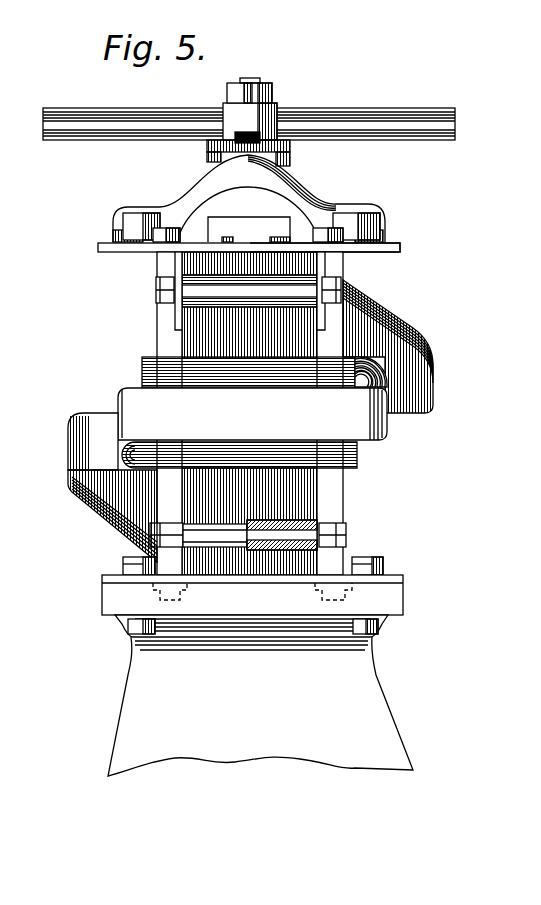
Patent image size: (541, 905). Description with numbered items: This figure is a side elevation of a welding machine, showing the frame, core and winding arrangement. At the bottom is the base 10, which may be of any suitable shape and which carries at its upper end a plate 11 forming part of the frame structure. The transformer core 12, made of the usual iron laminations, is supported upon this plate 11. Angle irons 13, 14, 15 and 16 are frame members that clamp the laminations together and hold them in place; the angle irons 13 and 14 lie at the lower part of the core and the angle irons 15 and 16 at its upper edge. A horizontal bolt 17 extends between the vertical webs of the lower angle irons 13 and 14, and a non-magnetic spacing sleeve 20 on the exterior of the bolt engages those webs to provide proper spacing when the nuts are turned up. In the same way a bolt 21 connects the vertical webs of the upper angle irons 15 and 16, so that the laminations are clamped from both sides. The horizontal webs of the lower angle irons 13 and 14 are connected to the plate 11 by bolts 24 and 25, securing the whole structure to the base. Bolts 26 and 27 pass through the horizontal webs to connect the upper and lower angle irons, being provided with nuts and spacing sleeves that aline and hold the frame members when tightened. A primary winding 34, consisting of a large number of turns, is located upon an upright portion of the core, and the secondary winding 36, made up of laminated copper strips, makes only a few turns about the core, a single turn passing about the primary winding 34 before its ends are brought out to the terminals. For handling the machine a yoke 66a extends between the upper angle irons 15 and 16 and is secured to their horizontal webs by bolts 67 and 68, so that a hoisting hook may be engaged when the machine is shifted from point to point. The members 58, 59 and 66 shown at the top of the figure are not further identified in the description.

The base 10 is at (260, 706).
The plate 11 is at (390, 597).
The transformer core 12 is at (200, 305).
The angle iron 13 is at (105, 575).
The angle iron 14 is at (403, 574).
The angle iron 15 is at (98, 250).
The angle iron 16 is at (403, 251).
The bolt 17 is at (317, 535).
The spacing sleeve 20 is at (280, 556).
The bolt 21 is at (343, 279).
The bolt 24 is at (380, 630).
The bolt 25 is at (128, 628).
The bolt 26 is at (151, 243).
The bolt 27 is at (323, 230).
The primary winding 34 is at (190, 378).
The secondary winding 36 is at (249, 421).
The cap nut 58 is at (252, 82).
The nut 59 is at (223, 96).
The handle bar 66 is at (335, 108).
The yoke 66a is at (205, 196).
The bolt 67 is at (135, 222).
The bolt 68 is at (376, 221).